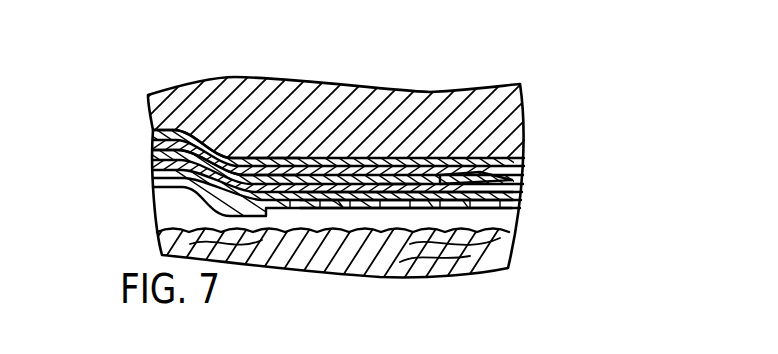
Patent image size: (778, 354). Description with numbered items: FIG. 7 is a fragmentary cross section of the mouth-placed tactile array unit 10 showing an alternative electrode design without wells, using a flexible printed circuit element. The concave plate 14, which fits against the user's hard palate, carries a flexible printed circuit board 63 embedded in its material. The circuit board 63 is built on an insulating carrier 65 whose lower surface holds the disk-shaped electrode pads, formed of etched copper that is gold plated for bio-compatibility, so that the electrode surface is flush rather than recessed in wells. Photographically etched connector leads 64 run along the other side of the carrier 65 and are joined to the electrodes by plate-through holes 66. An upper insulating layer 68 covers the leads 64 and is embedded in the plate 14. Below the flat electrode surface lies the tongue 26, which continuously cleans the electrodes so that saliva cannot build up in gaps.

The mouth-placed tactile array unit 10 is at (498, 83).
The concave plate 14 is at (510, 102).
The tongue 26 is at (510, 235).
The flexible printed circuit board 63 is at (138, 178).
The connector leads 64 is at (150, 150).
The insulating carrier 65 is at (512, 190).
The plate-through holes 66 is at (402, 188).
The upper insulating layer 68 is at (512, 180).